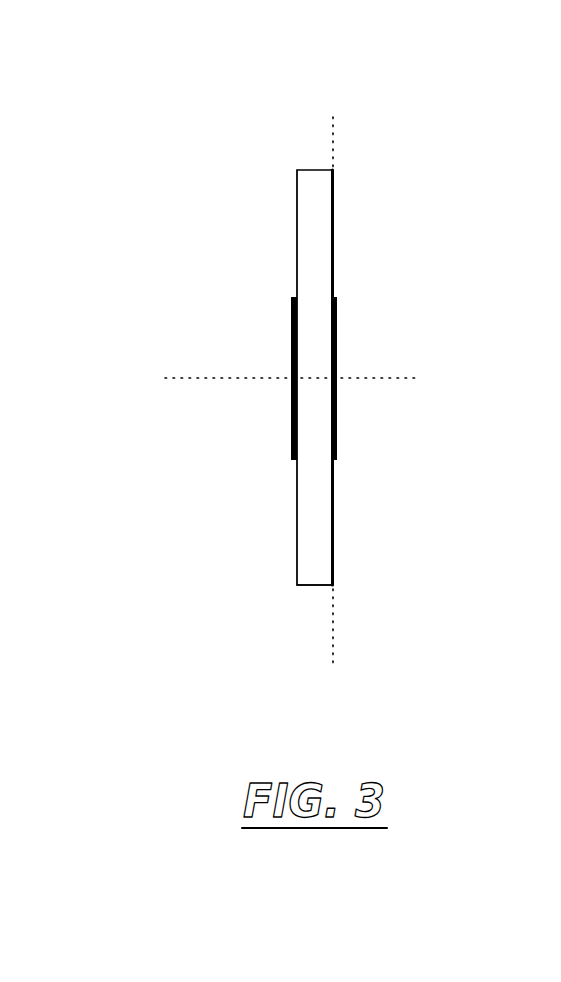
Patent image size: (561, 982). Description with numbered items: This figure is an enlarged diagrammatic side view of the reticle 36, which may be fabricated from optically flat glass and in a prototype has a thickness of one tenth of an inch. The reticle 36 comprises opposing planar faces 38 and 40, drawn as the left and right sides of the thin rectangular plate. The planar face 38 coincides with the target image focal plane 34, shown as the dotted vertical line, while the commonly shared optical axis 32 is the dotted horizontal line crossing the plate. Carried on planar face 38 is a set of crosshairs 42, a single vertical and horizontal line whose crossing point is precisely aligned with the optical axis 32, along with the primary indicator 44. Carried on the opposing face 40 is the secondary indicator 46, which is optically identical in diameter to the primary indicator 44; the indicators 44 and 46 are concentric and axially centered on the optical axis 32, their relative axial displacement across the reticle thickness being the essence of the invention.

The optical axis 32 is at (228, 378).
The target image focal plane 34 is at (334, 146).
The reticle 36 is at (198, 222).
The planar face 38 is at (331, 570).
The opposing planar face 40 is at (297, 552).
The crosshairs 42 is at (335, 240).
The primary indicator 44 is at (337, 413).
The secondary indicator 46 is at (291, 418).